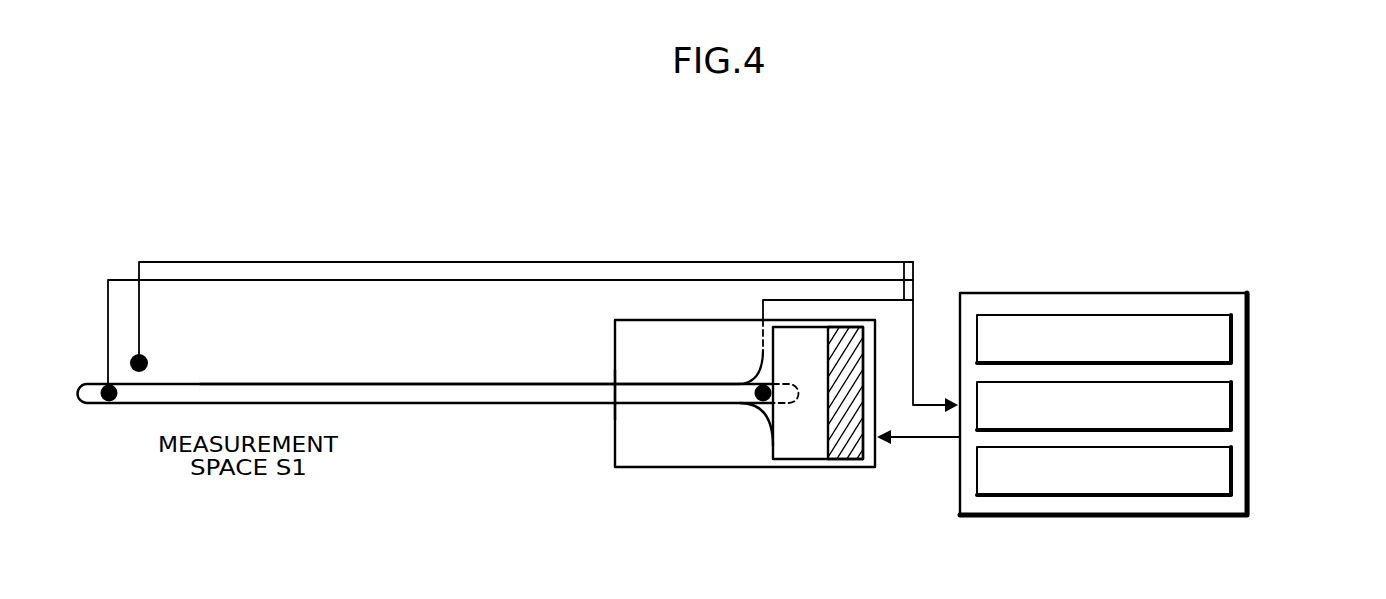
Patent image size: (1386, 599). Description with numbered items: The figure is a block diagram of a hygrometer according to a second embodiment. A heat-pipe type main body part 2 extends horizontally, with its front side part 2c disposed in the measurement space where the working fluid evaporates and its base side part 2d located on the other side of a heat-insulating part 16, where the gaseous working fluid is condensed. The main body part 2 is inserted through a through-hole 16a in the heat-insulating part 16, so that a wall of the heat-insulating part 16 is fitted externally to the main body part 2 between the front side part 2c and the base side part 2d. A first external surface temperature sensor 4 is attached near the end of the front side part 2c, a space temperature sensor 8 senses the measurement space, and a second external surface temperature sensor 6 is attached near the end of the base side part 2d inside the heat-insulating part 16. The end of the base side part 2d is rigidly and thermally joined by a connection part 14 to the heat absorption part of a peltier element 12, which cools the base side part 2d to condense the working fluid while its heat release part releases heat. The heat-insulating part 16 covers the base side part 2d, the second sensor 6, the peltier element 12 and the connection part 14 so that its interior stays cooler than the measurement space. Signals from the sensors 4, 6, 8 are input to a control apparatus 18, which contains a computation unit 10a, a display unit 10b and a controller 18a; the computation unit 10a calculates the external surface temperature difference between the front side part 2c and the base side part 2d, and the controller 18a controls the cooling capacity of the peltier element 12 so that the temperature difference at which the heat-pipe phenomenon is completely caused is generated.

The main body part 2 is at (426, 422).
The front side part 2c is at (284, 384).
The base side part 2d is at (656, 403).
The first external surface temperature sensor 4 is at (104, 398).
The second external surface temperature sensor 6 is at (756, 388).
The space temperature sensor 8 is at (148, 362).
The computation unit 10a is at (1233, 466).
The display unit 10b is at (1233, 337).
The peltier element 12 is at (850, 460).
The connection part 14 is at (798, 460).
The heat-insulating part 16 is at (653, 468).
The through-hole 16a is at (609, 404).
The control apparatus 18 is at (1288, 277).
The controller 18a is at (1233, 401).